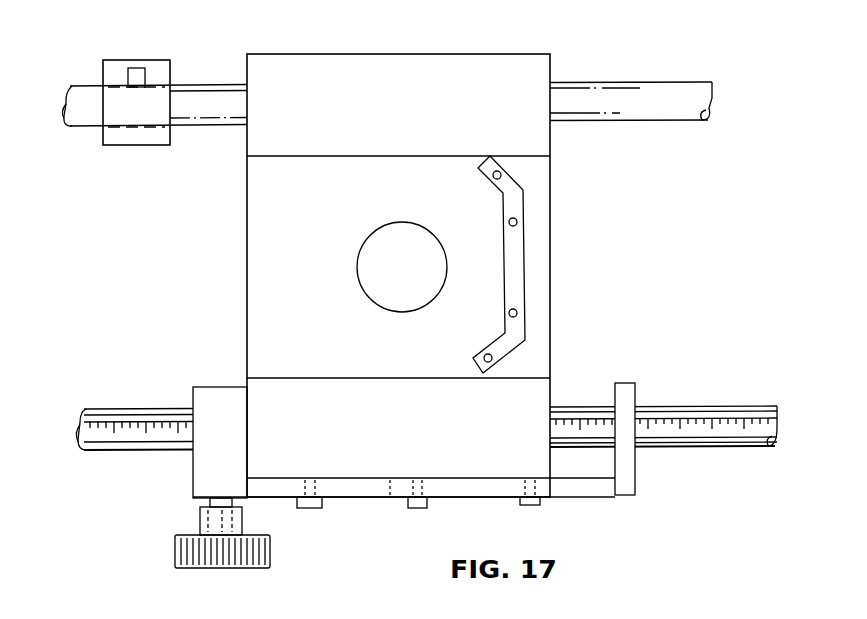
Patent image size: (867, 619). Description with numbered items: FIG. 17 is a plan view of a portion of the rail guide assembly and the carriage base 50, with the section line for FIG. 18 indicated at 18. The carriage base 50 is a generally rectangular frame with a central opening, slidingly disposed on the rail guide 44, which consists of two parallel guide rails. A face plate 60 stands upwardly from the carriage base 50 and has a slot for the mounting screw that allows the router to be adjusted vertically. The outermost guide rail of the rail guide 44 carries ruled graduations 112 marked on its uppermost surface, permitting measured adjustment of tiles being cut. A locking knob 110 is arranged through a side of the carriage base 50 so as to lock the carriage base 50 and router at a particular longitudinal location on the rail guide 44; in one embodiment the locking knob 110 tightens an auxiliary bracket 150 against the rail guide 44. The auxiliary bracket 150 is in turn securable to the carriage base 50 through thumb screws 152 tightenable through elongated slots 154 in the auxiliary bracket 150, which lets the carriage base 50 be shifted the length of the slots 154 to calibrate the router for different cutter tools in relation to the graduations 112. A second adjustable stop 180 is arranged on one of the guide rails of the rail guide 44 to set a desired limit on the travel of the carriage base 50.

The section line for FIG. 18 is at (142, 597).
The rail guide 44 is at (196, 119).
The carriage base 50 is at (247, 297).
The face plate 60 is at (525, 290).
The locking knob 110 is at (200, 526).
The ruled graduations 112 is at (702, 422).
The auxiliary bracket 150 is at (551, 498).
The thumb screws 152 is at (410, 504).
The elongated slots 154 is at (497, 487).
The second adjustable stop 180 is at (136, 82).